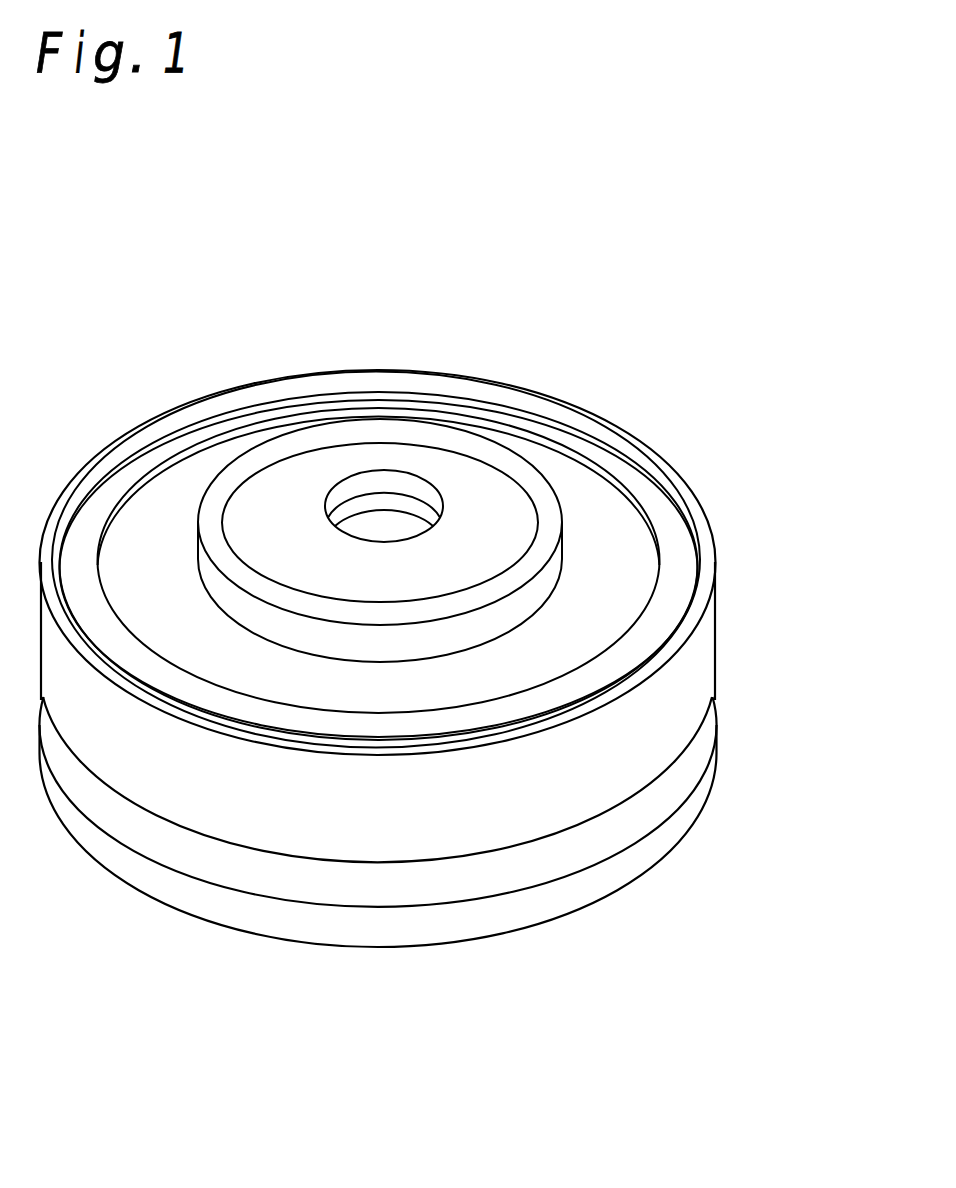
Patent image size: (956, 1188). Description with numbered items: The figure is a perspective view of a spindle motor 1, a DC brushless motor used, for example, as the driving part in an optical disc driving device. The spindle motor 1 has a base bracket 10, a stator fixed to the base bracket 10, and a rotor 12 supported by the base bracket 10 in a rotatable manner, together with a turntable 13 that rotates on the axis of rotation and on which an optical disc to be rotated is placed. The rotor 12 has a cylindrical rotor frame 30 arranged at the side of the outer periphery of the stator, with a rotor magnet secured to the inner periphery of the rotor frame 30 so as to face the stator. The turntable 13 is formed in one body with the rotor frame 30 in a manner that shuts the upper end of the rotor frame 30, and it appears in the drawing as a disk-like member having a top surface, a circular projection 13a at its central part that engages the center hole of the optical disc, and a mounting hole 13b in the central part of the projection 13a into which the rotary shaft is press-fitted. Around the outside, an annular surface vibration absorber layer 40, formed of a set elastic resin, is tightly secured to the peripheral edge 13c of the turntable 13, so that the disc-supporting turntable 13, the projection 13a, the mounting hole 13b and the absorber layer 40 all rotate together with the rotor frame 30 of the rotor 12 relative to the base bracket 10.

The spindle motor 1 is at (663, 392).
The base bracket 10 is at (707, 797).
The rotor 12 is at (718, 655).
The turntable 13 is at (613, 517).
The circular projection 13a is at (505, 477).
The mounting hole 13b is at (372, 512).
The peripheral edge 13c is at (650, 438).
The rotor frame 30 is at (718, 598).
The surface vibration absorber layer 40 is at (682, 517).